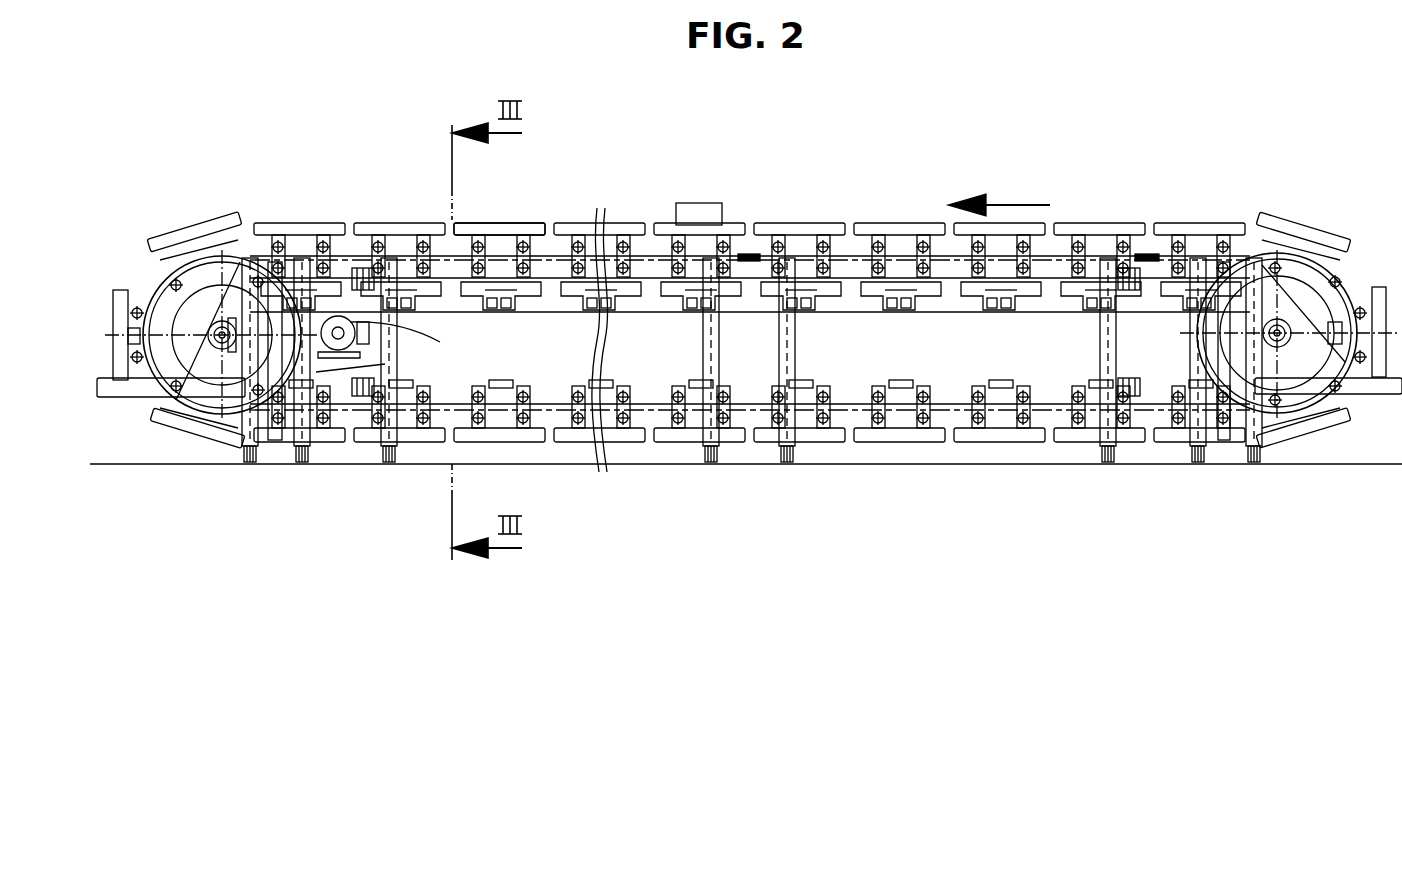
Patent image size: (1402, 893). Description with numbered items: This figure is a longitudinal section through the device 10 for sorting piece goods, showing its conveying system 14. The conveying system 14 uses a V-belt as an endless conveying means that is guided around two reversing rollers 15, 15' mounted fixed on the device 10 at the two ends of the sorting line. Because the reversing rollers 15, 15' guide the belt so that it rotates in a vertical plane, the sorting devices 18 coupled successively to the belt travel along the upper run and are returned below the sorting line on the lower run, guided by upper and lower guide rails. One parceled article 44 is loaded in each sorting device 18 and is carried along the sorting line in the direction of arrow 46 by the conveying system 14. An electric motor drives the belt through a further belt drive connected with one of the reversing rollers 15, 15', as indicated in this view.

The device for sorting piece goods 10 is at (811, 213).
The conveying system 14 is at (641, 398).
The reversing roller 15 is at (1291, 326).
The reversing roller 15' is at (208, 303).
The sorting device 18 is at (521, 212).
The parceled article 44 is at (697, 212).
The arrow 46 is at (1013, 205).